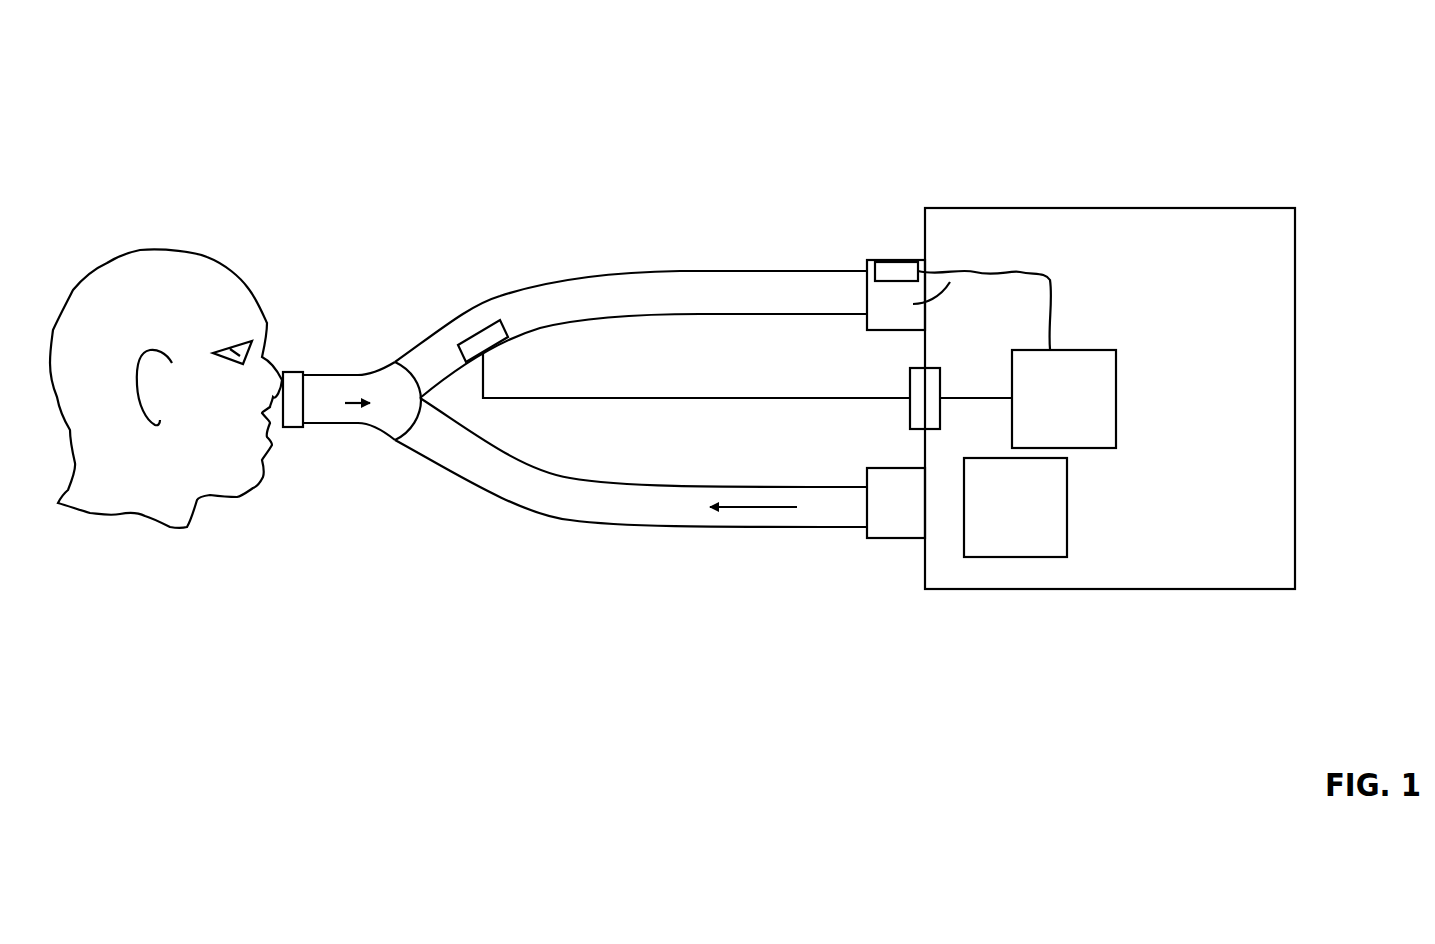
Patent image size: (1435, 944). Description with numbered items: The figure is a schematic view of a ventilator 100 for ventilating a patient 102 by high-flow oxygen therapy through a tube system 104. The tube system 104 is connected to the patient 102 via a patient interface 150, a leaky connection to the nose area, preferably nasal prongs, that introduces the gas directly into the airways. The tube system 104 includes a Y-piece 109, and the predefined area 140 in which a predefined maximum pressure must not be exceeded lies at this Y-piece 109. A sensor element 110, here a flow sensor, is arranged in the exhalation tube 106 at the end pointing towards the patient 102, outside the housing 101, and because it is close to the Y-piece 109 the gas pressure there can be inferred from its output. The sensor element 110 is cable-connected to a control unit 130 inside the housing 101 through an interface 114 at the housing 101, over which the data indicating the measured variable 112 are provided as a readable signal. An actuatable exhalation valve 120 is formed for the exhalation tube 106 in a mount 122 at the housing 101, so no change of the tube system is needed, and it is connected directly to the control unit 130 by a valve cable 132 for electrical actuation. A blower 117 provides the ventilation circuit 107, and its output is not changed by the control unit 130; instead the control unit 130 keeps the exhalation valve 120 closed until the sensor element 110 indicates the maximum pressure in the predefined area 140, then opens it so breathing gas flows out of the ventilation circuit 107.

The ventilator 100 is at (1246, 108).
The housing 101 is at (1107, 589).
The patient 102 is at (140, 250).
The tube system 104 is at (634, 562).
The exhalation tube 106 is at (714, 271).
The ventilation circuit 107 is at (748, 507).
The Y-piece 109 is at (382, 385).
The sensor element 110 is at (488, 328).
The measured variable 112 is at (592, 398).
The interface 114 is at (908, 412).
The blower 117 is at (1037, 516).
The exhalation valve 120 is at (898, 270).
The mount 122 is at (913, 304).
The control unit 130 is at (1086, 417).
The valve cable 132 is at (1013, 272).
The predefined area 140 is at (345, 403).
The patient interface 150 is at (292, 371).